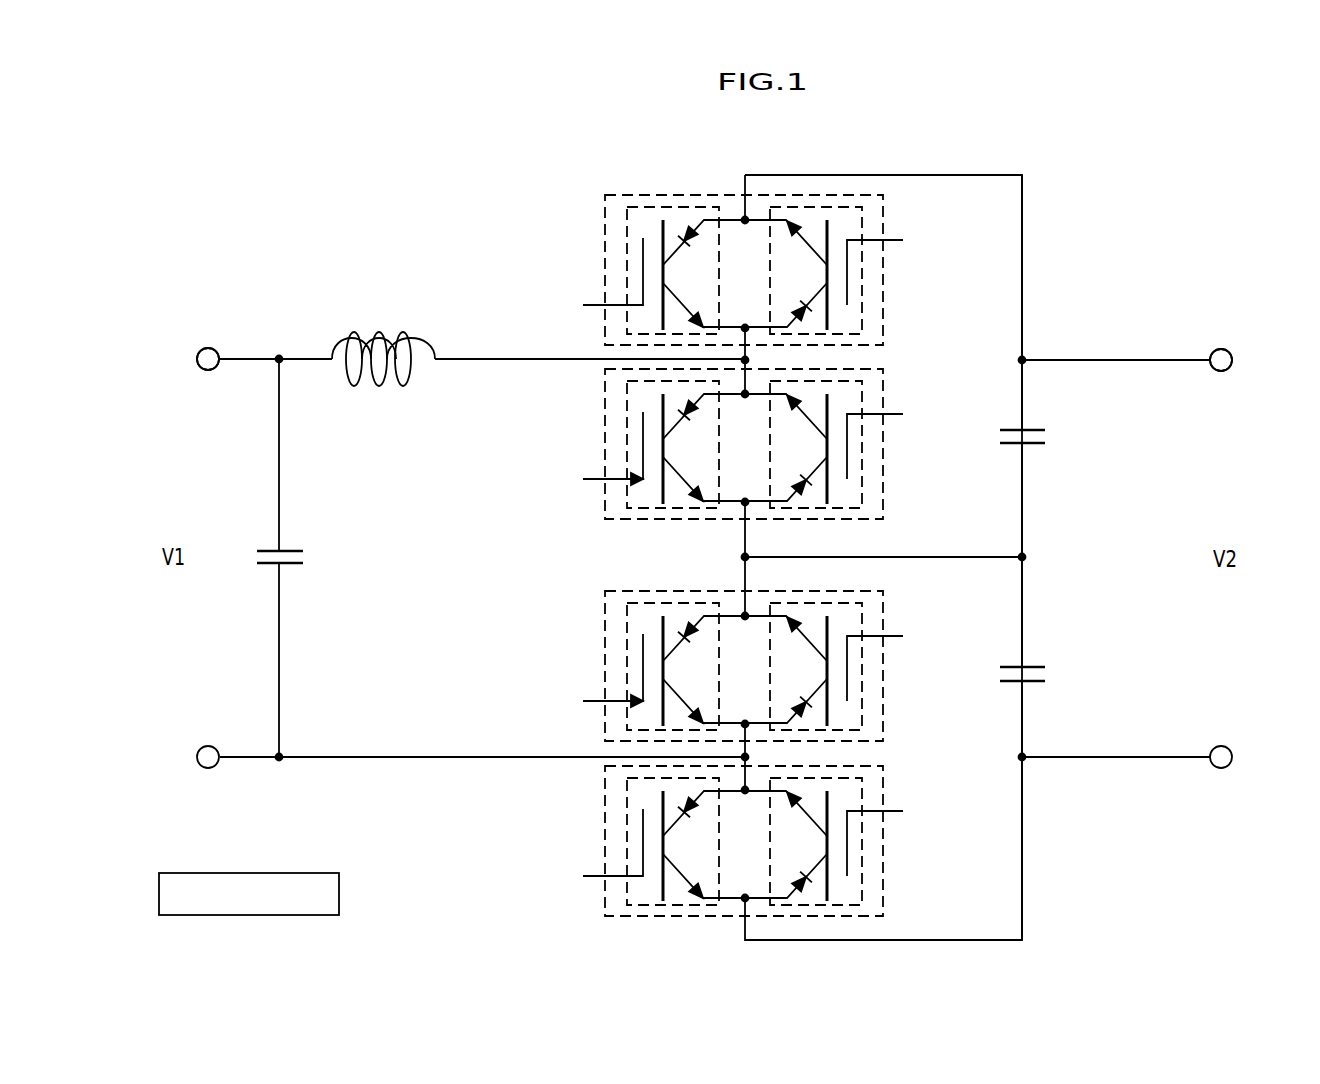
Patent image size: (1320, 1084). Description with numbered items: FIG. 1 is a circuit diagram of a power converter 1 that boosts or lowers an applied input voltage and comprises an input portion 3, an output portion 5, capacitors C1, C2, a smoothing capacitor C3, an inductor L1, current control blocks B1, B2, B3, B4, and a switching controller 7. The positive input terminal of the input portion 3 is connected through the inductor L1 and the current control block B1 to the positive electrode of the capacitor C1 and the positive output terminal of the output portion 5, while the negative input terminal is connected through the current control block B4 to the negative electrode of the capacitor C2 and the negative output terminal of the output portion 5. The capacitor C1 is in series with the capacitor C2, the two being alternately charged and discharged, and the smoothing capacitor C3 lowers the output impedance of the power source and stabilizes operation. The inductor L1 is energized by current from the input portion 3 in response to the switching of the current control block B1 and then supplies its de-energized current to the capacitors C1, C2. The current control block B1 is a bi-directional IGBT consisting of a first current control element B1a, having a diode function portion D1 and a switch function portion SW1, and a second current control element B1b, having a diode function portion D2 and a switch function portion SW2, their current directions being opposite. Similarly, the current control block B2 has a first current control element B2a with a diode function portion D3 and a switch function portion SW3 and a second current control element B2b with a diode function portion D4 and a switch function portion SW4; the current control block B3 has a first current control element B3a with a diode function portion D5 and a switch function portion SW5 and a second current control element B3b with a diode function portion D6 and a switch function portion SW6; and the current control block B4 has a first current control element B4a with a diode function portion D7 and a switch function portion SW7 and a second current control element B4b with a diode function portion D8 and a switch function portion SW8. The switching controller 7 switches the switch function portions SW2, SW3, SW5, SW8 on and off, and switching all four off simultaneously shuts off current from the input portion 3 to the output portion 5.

The power converter 1 is at (941, 150).
The input portion 3 is at (208, 335).
The output portion 5 is at (1221, 337).
The switching controller 7 is at (249, 872).
The current control block B1 is at (605, 214).
The first current control element B1a is at (627, 314).
The second current control element B1b is at (862, 314).
The current control block B2 is at (746, 453).
The first current control element B2a is at (646, 437).
The second current control element B2b is at (845, 437).
The current control block B3 is at (746, 666).
The first current control element B3a is at (646, 670).
The second current control element B3b is at (845, 670).
The current control block B4 is at (746, 854).
The first current control element B4a is at (646, 836).
The second current control element B4b is at (845, 836).
The switch function portion SW1 is at (629, 275).
The switch function portion SW2 is at (859, 275).
The switch function portion SW3 is at (629, 449).
The switch function portion SW4 is at (859, 449).
The switch function portion SW5 is at (629, 671).
The switch function portion SW6 is at (859, 671).
The switch function portion SW7 is at (629, 846).
The switch function portion SW8 is at (859, 846).
The diode function portion D1 is at (689, 258).
The diode function portion D2 is at (798, 291).
The diode function portion D3 is at (689, 432).
The diode function portion D4 is at (798, 465).
The diode function portion D5 is at (689, 653).
The diode function portion D6 is at (798, 686).
The diode function portion D7 is at (689, 827).
The diode function portion D8 is at (798, 860).
The inductor L1 is at (383, 360).
The capacitor C1 is at (1041, 437).
The capacitor C2 is at (1037, 675).
The smoothing capacitor C3 is at (296, 557).